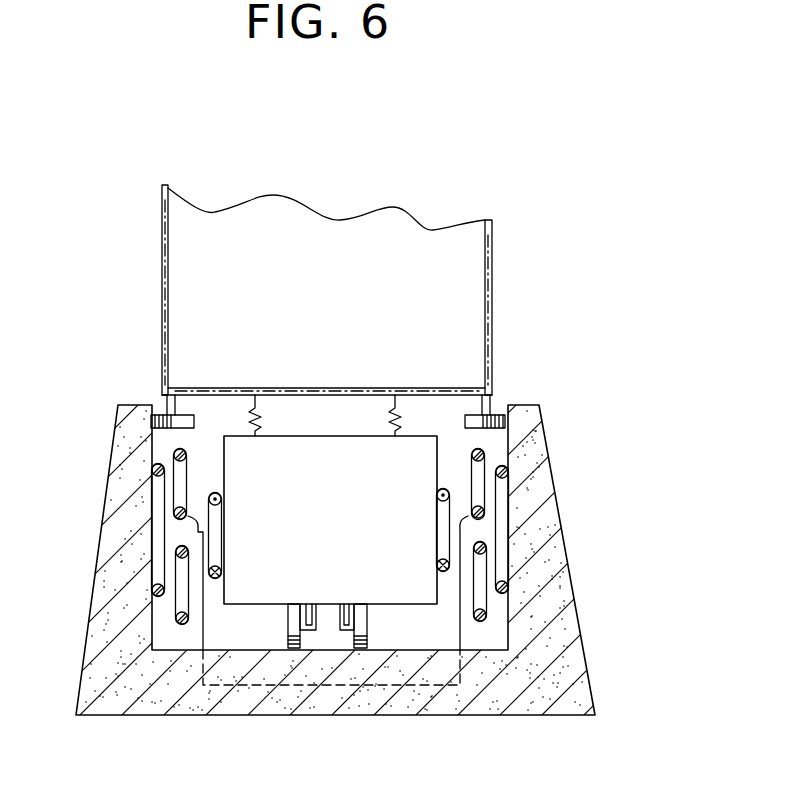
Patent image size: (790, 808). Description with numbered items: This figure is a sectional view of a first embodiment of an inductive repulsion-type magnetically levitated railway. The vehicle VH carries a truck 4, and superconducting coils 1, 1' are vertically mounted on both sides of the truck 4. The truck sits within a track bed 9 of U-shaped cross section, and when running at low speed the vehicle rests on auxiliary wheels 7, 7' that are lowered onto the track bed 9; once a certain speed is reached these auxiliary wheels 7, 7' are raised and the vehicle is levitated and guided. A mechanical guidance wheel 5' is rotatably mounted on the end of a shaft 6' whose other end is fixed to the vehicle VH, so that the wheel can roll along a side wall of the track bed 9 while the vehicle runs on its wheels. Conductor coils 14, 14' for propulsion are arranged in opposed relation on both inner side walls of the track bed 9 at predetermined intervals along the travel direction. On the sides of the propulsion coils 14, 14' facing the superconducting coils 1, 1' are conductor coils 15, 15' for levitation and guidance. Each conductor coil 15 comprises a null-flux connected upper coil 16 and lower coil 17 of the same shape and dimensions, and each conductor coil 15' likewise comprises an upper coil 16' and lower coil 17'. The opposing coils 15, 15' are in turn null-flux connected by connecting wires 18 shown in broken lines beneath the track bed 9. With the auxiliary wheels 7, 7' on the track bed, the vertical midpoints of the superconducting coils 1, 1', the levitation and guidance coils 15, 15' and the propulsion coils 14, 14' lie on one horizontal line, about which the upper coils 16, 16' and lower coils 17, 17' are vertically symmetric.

The vehicle VH is at (435, 235).
The truck 4 is at (335, 448).
The superconducting coil 1 is at (242, 533).
The superconducting coil 1' is at (420, 530).
The mechanical guidance wheel 5' is at (517, 389).
The shaft 6' is at (516, 371).
The auxiliary wheel 7 is at (266, 690).
The auxiliary wheel 7' is at (332, 690).
The track bed 9 is at (527, 695).
The conductor coil for propulsion 14 is at (103, 530).
The conductor coil for propulsion 14' is at (564, 530).
The conductor coil for levitation and guidance 15 is at (111, 422).
The conductor coil for levitation and guidance 15' is at (557, 417).
The upper coil 16 is at (199, 473).
The upper coil 16' is at (460, 472).
The lower coil 17 is at (221, 593).
The lower coil 17' is at (449, 593).
The connecting wire 18 is at (418, 685).